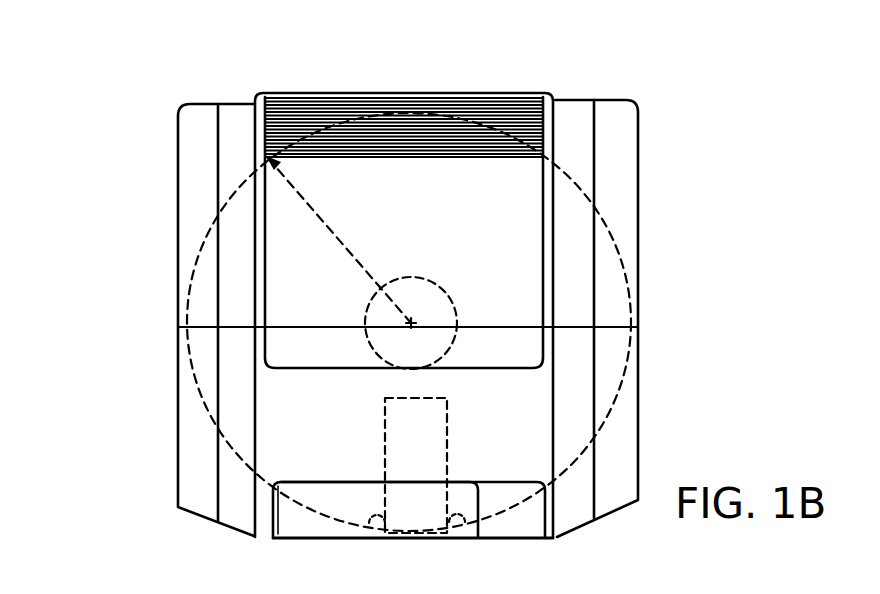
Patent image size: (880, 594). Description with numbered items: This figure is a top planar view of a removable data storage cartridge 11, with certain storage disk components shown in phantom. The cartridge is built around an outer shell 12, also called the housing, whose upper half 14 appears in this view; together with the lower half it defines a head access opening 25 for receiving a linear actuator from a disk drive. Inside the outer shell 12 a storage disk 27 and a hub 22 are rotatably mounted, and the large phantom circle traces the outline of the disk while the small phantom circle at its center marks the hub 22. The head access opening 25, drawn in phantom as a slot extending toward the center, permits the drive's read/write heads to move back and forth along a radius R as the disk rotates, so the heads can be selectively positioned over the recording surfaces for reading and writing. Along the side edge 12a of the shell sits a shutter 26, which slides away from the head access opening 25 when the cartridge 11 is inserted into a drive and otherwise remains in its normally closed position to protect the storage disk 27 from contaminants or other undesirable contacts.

The data storage cartridge 11 is at (143, 201).
The outer shell 12 is at (639, 166).
The side edge 12a is at (270, 533).
The upper half 14 is at (577, 110).
The hub 22 is at (433, 283).
The head access opening 25 is at (447, 417).
The shutter 26 is at (457, 540).
The storage disk 27 is at (628, 452).
The radius R is at (313, 208).